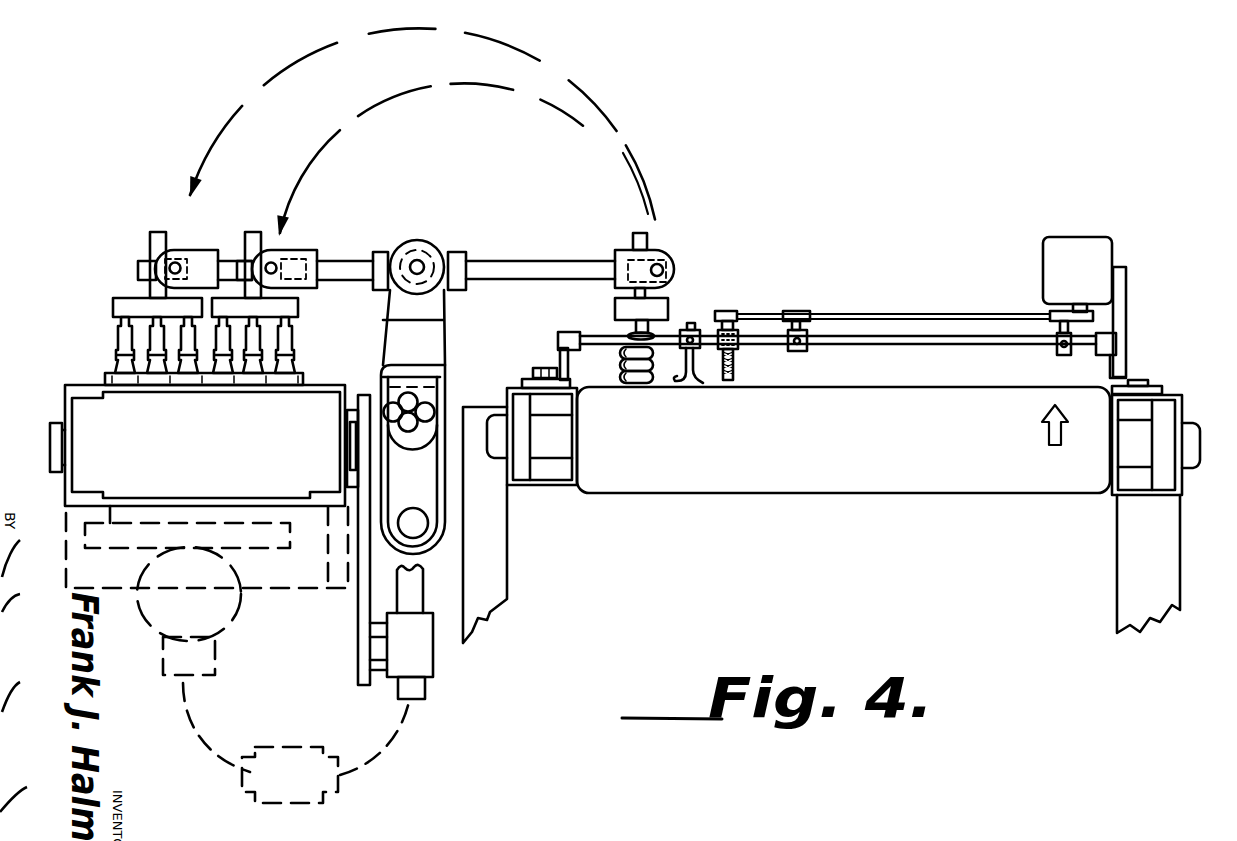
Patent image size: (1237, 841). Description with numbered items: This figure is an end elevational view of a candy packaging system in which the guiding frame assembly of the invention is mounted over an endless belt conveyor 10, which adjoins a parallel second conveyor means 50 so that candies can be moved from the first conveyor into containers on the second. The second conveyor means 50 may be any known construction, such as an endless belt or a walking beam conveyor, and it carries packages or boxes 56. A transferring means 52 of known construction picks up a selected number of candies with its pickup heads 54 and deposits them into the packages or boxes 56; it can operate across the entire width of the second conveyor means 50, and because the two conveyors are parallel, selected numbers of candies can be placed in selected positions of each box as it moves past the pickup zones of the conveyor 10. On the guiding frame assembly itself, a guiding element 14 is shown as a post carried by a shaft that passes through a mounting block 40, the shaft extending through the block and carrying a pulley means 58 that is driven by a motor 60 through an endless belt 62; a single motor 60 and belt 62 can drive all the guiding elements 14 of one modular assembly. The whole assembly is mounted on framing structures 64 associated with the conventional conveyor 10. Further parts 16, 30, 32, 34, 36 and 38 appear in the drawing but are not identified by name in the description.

The endless belt conveyor 10 is at (967, 430).
The guiding element 14 is at (735, 373).
The hook arm 16 is at (705, 382).
The bracket 30 is at (518, 375).
The guide rod 32 is at (940, 350).
The support block 34 is at (571, 332).
The upright post 36 is at (560, 356).
The follower 38 is at (688, 325).
The mounting block 40 is at (740, 338).
The second conveyor means 50 is at (52, 400).
The transferring means 52 is at (457, 212).
The pickup heads 54 is at (641, 386).
The packages or boxes 56 is at (306, 380).
The pulley means 58 is at (738, 313).
The motor 60 is at (1066, 248).
The endless belt 62 is at (890, 330).
The framing structures 64 is at (501, 405).